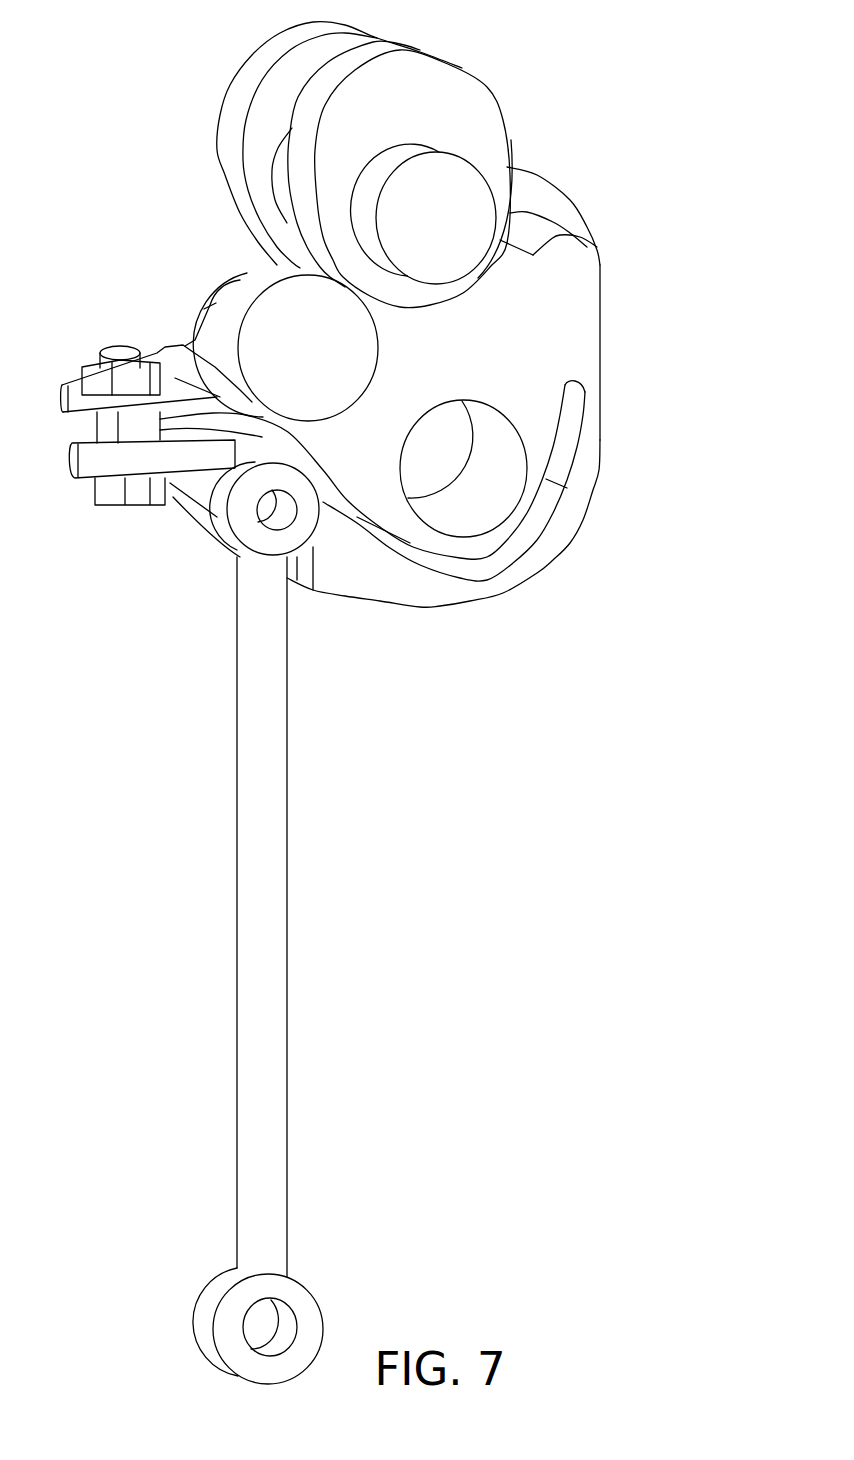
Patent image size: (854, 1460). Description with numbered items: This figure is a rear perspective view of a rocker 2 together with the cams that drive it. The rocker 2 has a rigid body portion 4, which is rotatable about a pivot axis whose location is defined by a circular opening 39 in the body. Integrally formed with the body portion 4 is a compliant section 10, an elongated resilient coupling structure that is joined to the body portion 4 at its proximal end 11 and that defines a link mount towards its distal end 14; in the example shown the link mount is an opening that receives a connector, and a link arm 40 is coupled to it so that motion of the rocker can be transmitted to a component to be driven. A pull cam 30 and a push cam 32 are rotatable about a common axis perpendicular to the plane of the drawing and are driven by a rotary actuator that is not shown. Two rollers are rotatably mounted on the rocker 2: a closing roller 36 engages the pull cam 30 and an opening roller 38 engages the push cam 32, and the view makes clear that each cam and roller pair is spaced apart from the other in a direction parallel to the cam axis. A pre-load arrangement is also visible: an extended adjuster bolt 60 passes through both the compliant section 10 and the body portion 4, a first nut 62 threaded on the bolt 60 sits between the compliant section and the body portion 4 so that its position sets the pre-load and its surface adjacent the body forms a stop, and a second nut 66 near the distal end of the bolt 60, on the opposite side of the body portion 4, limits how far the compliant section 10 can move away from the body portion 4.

The rocker 2 is at (696, 391).
The rigid body portion 4 is at (530, 310).
The compliant section 10 is at (452, 600).
The proximal end 11 is at (587, 443).
The distal end 14 is at (87, 467).
The pull cam 30 is at (257, 65).
The push cam 32 is at (465, 86).
The closing roller 36 is at (553, 195).
The opening roller 38 is at (275, 297).
The circular opening 39 is at (462, 401).
The link arm 40 is at (272, 987).
The adjuster bolt 60 is at (102, 500).
The first nut 62 is at (97, 437).
The second nut 66 is at (88, 362).